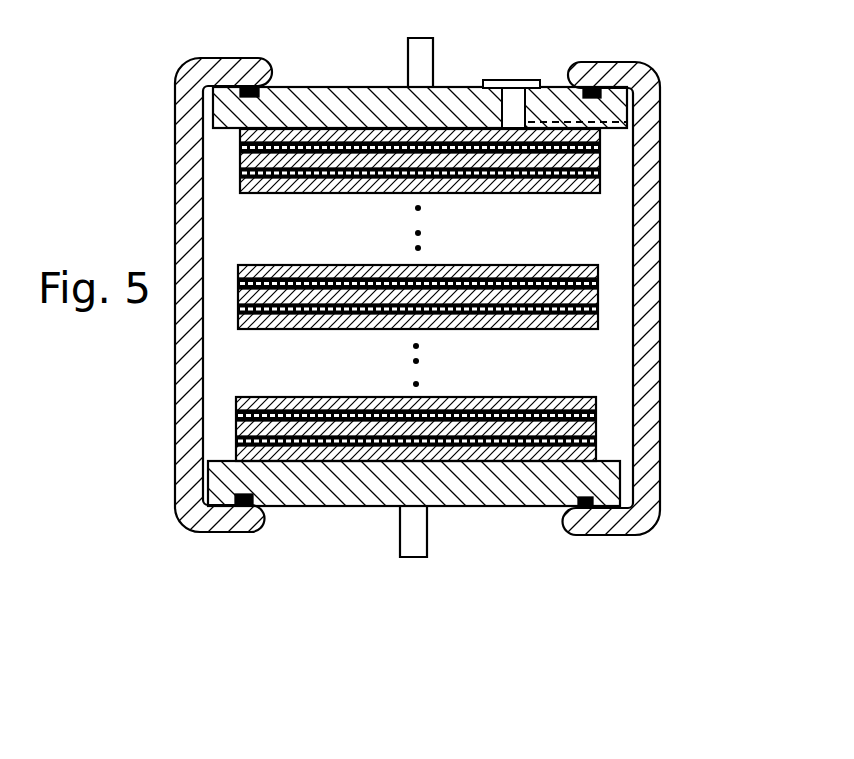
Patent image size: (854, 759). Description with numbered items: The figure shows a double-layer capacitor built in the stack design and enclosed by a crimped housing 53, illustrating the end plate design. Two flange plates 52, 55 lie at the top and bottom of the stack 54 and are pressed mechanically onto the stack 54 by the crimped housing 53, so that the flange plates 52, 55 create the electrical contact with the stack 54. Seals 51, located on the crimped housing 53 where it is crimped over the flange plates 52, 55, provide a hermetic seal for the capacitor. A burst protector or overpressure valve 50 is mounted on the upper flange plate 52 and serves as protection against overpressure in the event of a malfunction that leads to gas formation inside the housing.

The burst protector or overpressure valve 50 is at (507, 110).
The seals 51 is at (648, 70).
The flange plate 52 is at (627, 128).
The crimped housing 53 is at (648, 212).
The stack 54 is at (570, 197).
The flange plate 55 is at (557, 470).